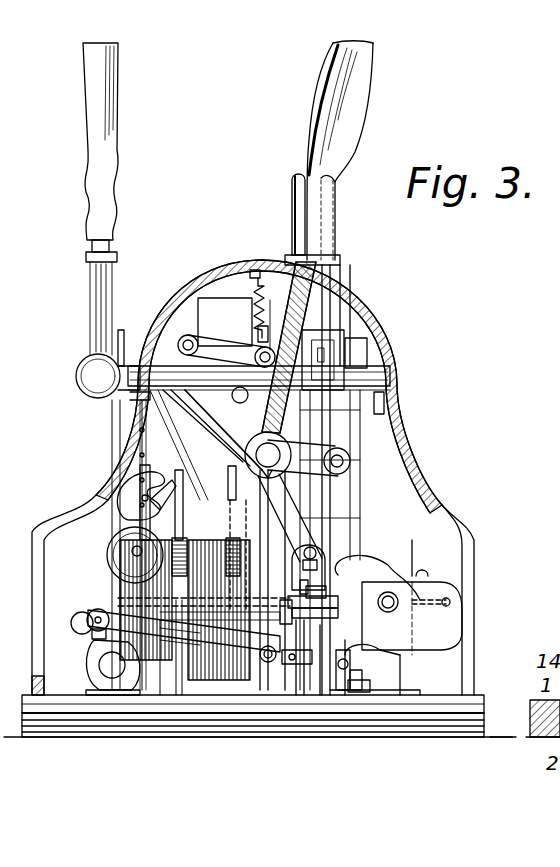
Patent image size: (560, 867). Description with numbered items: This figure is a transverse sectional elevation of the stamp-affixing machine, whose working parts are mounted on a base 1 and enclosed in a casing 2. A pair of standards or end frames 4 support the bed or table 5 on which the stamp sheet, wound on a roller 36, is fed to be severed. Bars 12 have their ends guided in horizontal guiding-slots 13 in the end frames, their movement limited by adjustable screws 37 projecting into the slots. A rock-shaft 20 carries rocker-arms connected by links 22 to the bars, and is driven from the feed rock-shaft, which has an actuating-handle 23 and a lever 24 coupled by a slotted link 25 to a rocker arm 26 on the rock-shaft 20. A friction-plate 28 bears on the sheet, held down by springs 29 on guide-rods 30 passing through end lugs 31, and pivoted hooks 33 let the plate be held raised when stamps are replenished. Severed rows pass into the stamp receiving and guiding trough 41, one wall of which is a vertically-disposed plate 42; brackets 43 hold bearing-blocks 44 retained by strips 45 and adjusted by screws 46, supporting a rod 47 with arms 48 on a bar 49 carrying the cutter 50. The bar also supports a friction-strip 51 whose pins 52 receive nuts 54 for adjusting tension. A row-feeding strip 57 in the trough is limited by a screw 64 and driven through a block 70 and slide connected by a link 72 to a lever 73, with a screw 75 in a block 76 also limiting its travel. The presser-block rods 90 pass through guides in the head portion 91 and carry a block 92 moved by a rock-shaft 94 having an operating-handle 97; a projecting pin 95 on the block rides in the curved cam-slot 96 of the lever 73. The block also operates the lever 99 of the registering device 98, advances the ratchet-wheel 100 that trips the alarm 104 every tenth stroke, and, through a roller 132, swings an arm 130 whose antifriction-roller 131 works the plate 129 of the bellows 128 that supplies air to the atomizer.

The base 1 is at (118, 718).
The casing 2 is at (260, 498).
The standards or end frames 4 is at (185, 572).
The bed or table 5 is at (104, 620).
The bars 12 is at (184, 680).
The guiding-slots 13 is at (164, 640).
The rock-shaft 20 is at (112, 690).
The links 22 is at (280, 462).
The actuating-handle 23 is at (323, 219).
The lever 24 is at (245, 553).
The slotted link 25 is at (220, 614).
The rocker arm 26 is at (110, 662).
The friction-plate 28 is at (204, 590).
The springs 29 is at (176, 528).
The guide-rods 30 is at (216, 481).
The end lugs 31 is at (186, 580).
The hooks 33 is at (126, 518).
The roller 36 is at (118, 548).
The adjustable screws 37 is at (96, 633).
The stamp receiving and guiding trough 41 is at (391, 667).
The vertically-disposed plate 42 is at (306, 606).
The brackets 43 is at (420, 625).
The bearing-blocks 44 is at (400, 648).
The strips 45 is at (396, 580).
The screws 46 is at (396, 597).
The rod 47 is at (345, 612).
The arms 48 is at (312, 590).
The bar 49 is at (318, 582).
The cutter 50 is at (272, 540).
The friction-strip 51 is at (330, 670).
The pins 52 is at (318, 556).
The nuts 54 is at (304, 560).
The row-feeding strip 57 is at (312, 650).
The screw 64 is at (302, 640).
The block 70 is at (352, 678).
The link 72 is at (352, 680).
The lever 73 is at (344, 404).
The screw 75 is at (350, 664).
The block 76 is at (366, 684).
The rods 90 is at (296, 237).
The head portion 91 is at (262, 469).
The block 92 is at (316, 337).
The rock-shaft 94 is at (362, 374).
The projecting pin 95 is at (352, 358).
The curved cam-slot 96 is at (383, 395).
The operating-handle 97 is at (94, 302).
The registering device 98 is at (225, 322).
The lever 99 is at (254, 330).
The ratchet-wheel 100 is at (265, 430).
The gong or other alarm 104 is at (117, 340).
The bellows 128 is at (200, 445).
The plate 129 is at (205, 433).
The arm 130 is at (258, 398).
The antifriction-roller 131 is at (228, 434).
The roller 132 is at (265, 352).